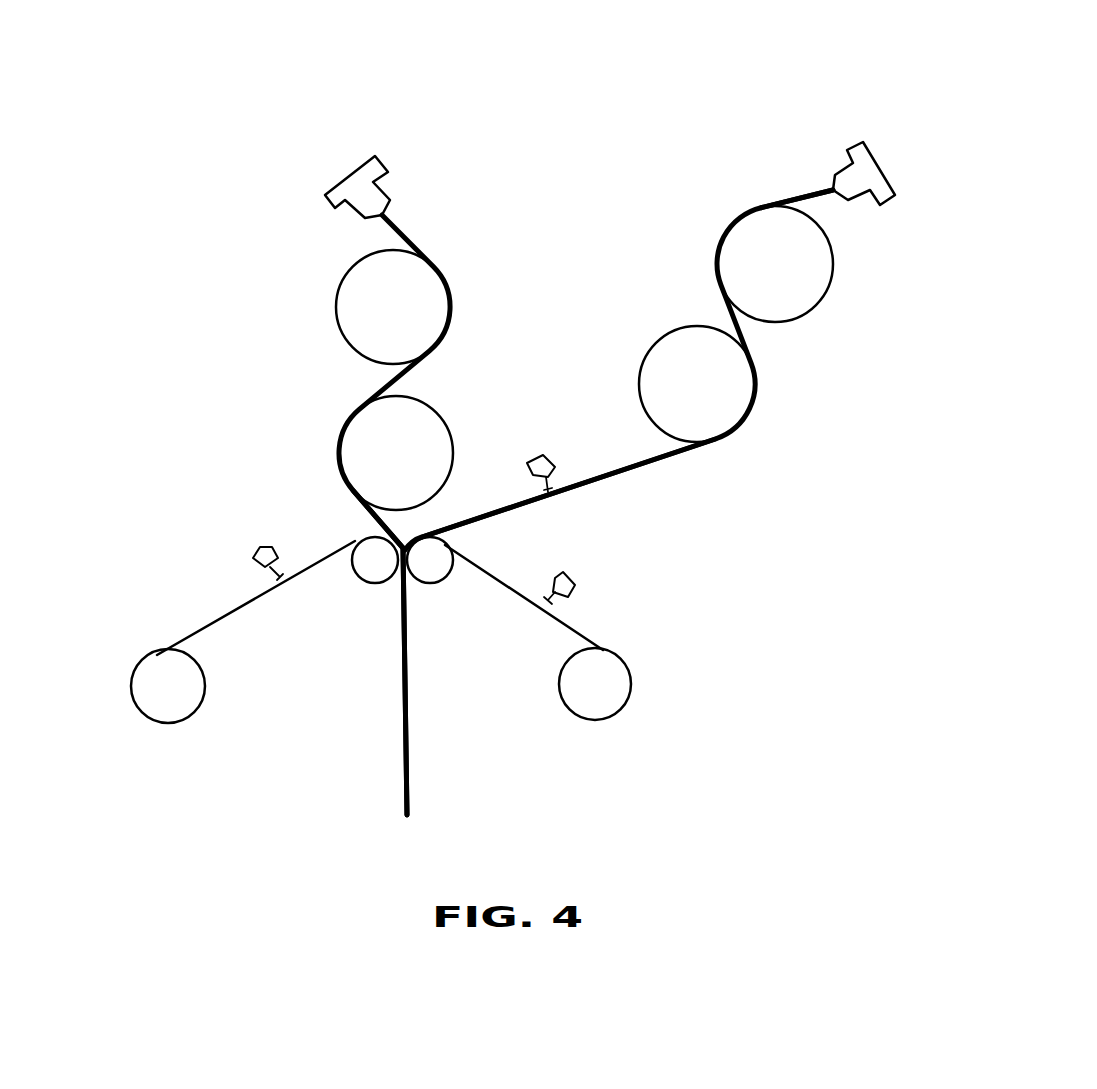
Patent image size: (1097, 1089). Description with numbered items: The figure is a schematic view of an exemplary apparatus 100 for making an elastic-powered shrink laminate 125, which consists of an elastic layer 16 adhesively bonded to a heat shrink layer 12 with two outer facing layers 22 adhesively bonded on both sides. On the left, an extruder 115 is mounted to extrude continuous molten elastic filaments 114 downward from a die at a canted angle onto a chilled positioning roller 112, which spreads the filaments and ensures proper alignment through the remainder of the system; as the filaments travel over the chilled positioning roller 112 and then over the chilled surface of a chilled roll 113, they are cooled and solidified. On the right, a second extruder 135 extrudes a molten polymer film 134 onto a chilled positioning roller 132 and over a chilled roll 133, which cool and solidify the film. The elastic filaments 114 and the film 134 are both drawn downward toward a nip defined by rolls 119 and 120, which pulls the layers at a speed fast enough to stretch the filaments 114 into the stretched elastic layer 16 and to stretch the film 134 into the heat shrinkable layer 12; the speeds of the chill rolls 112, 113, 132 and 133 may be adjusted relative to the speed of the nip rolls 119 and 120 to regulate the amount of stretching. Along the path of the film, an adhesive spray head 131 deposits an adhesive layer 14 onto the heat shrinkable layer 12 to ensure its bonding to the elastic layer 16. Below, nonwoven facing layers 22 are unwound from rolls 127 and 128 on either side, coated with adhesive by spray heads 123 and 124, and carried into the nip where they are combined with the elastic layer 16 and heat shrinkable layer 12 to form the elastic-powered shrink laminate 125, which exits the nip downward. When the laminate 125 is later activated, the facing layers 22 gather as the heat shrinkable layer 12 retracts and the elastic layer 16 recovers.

The apparatus 100 is at (626, 50).
The heat shrink layer 12 is at (588, 478).
The adhesive layer 14 is at (481, 516).
The elastic layer 16 is at (377, 522).
The outer facing layers 22 is at (216, 613).
The chilled positioning roller 112 is at (336, 305).
The chilled roll 113 is at (339, 442).
The continuous molten elastic filaments 114 is at (405, 237).
The extruder 115 is at (388, 172).
The nip roll 119 is at (365, 581).
The nip roll 120 is at (440, 582).
The adhesive spray head 123 is at (258, 550).
The adhesive spray head 124 is at (570, 578).
The elastic-powered shrink laminate 125 is at (402, 703).
The roll 127 is at (138, 708).
The roll 128 is at (622, 705).
The adhesive spray head 131 is at (540, 456).
The chilled positioning roller 132 is at (818, 275).
The chilled roll 133 is at (672, 355).
The molten polymer film 134 is at (805, 195).
The second extruder 135 is at (880, 162).